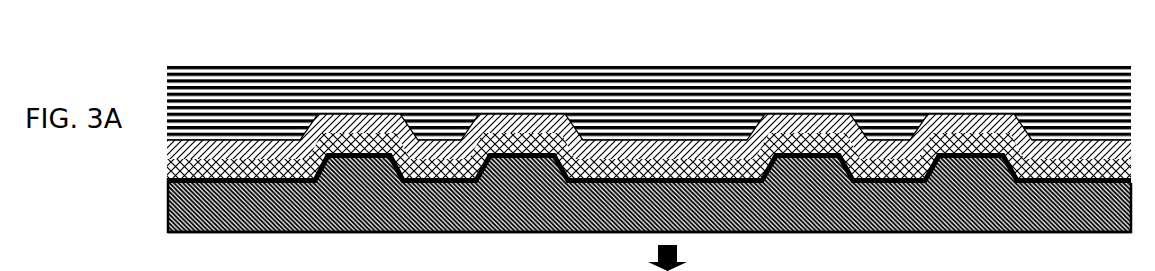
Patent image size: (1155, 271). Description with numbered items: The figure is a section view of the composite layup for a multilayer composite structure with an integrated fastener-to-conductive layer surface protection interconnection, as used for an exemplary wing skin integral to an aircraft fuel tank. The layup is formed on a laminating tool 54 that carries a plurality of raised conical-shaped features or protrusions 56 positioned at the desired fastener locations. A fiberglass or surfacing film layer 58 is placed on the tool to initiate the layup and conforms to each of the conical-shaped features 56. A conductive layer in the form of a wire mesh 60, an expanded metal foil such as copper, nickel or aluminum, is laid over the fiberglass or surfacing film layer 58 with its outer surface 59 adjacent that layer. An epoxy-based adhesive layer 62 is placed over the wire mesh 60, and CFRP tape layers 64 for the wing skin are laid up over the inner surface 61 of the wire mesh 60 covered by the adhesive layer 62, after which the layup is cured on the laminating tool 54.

The laminating tool 54 is at (170, 205).
The raised conical-shaped features 56 is at (338, 215).
The fiberglass or surfacing film layer 58 is at (170, 181).
The outer surface 59 is at (263, 233).
The wire mesh 60 is at (170, 172).
The inner surface 61 is at (201, 141).
The adhesive layer 62 is at (168, 155).
The CFRP tape layers 64 is at (168, 89).